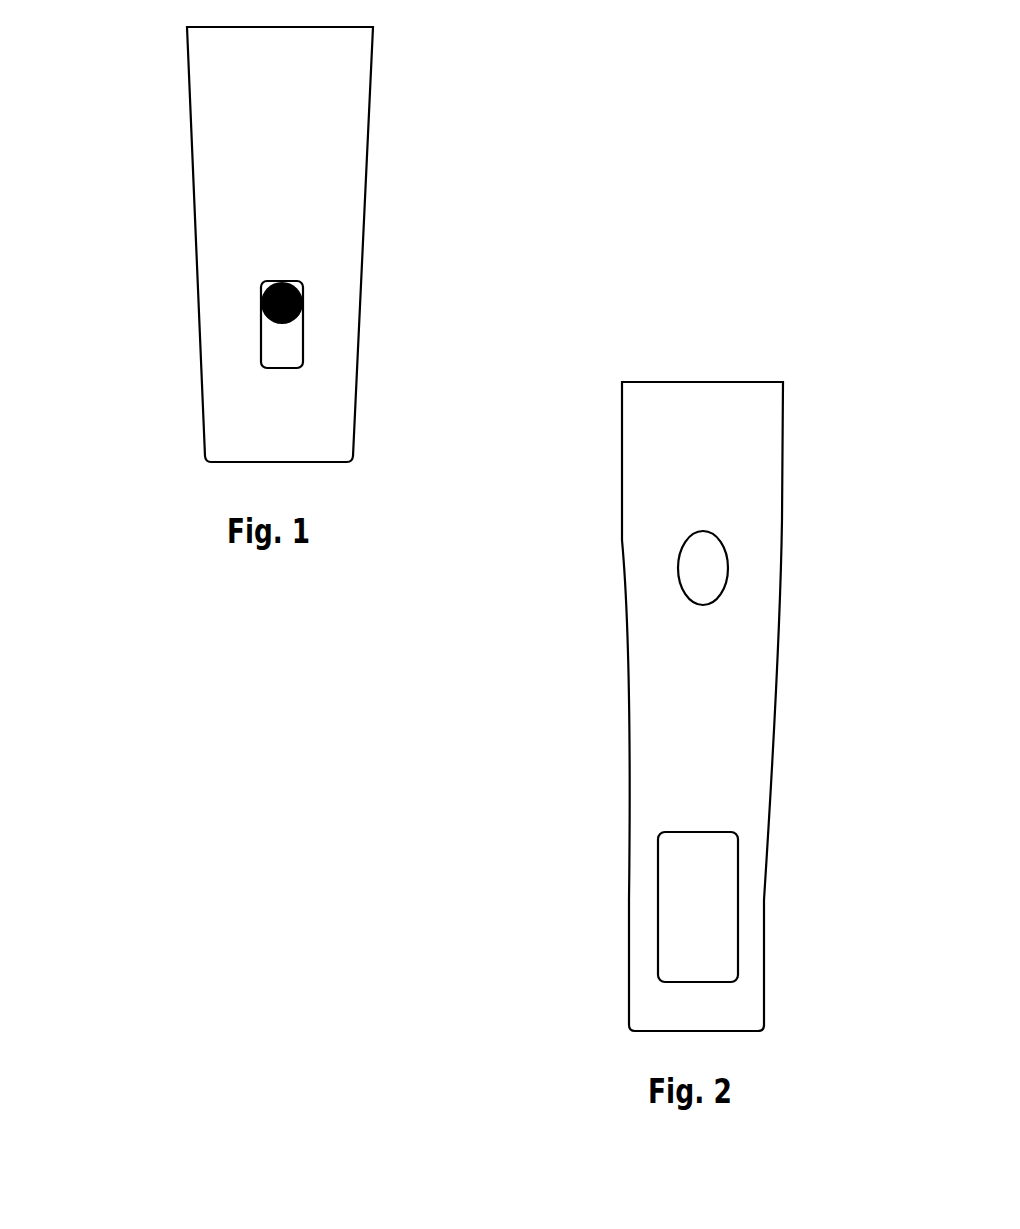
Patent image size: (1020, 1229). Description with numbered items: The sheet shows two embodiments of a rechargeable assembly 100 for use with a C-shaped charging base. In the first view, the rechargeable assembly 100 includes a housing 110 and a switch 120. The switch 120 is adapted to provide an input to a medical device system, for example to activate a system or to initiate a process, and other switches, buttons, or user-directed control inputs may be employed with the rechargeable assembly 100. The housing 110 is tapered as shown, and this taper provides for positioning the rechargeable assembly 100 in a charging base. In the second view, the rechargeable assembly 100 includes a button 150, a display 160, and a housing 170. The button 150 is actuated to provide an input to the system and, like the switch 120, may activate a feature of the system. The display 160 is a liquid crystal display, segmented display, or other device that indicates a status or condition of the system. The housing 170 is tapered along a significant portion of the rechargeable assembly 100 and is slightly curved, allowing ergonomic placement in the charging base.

In FIG. 1, the rechargeable assembly 100 is at (136, 109).
In FIG. 2, the rechargeable assembly 100 is at (514, 872).
In FIG. 1, the housing 110 is at (368, 217).
In FIG. 1, the switch 120 is at (304, 302).
In FIG. 2, the button 150 is at (731, 565).
In FIG. 2, the display 160 is at (693, 921).
In FIG. 2, the housing 170 is at (771, 680).